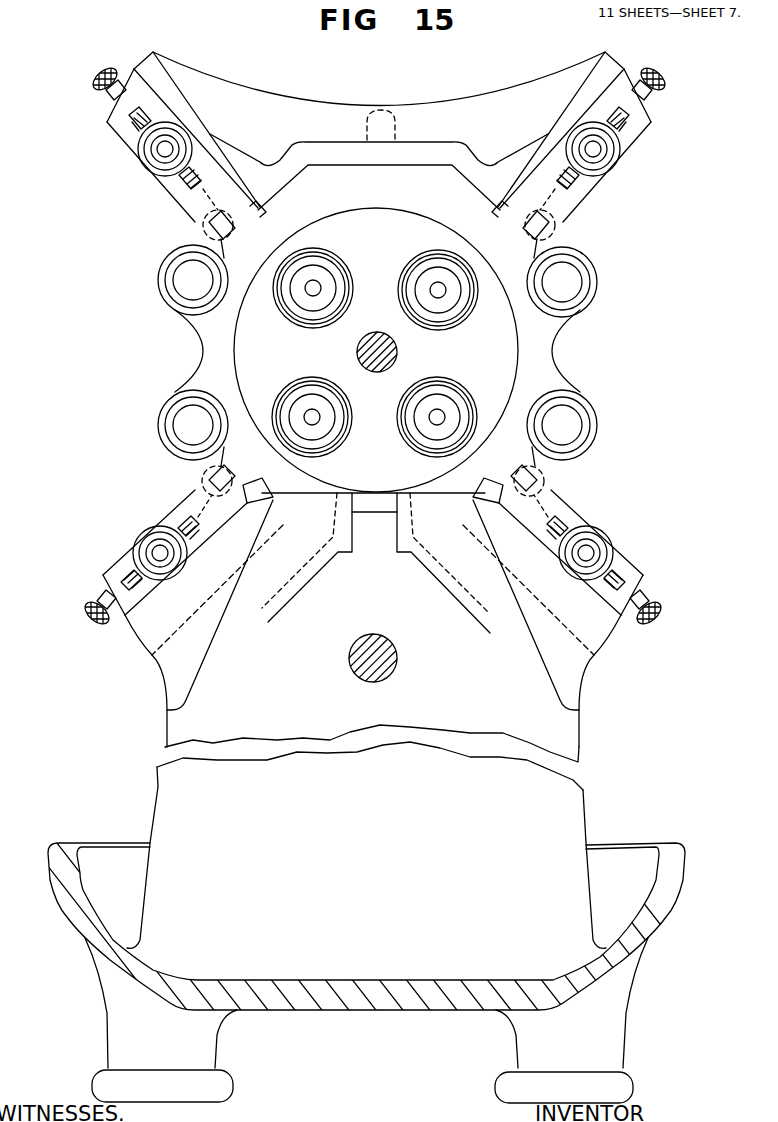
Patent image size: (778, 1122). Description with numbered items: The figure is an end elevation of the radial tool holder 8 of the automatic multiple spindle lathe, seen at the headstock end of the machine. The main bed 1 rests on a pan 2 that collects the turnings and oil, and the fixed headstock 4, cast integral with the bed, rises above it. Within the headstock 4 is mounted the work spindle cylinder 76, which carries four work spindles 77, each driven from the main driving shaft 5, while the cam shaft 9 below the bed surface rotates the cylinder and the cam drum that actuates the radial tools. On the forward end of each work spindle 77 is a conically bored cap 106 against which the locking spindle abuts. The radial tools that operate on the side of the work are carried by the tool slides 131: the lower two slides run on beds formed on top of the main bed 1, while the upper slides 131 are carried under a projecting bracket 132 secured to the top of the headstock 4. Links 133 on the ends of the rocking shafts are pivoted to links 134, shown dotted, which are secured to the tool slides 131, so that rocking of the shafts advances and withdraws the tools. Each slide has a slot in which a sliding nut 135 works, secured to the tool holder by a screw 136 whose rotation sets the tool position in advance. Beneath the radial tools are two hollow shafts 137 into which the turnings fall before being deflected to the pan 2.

The main bed 1 is at (160, 790).
The pan 2 is at (632, 865).
The headstock 4 is at (177, 308).
The driving shaft 5 is at (390, 353).
The radial tool holder 8 is at (377, 399).
The cam shaft 9 is at (387, 662).
The work spindle cylinder 76 is at (250, 353).
The work spindles 77 is at (322, 307).
The cap 106 is at (323, 262).
The tool slides 131 is at (125, 133).
The projecting bracket 132 is at (324, 112).
The links 133 is at (192, 240).
The links 134 is at (236, 223).
The sliding nuts 135 is at (170, 157).
The screws 136 is at (163, 140).
The hollow shafts 137 is at (200, 642).